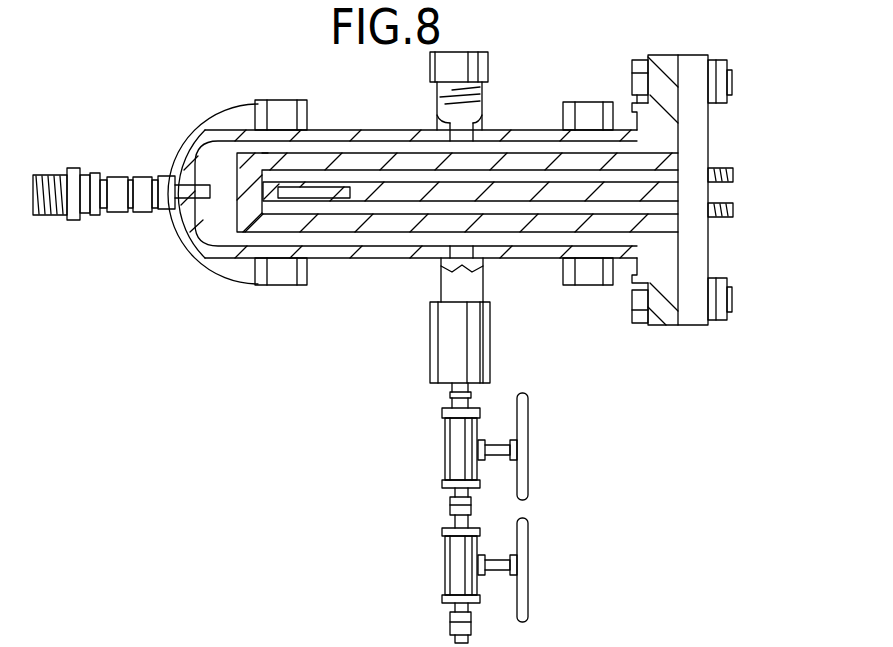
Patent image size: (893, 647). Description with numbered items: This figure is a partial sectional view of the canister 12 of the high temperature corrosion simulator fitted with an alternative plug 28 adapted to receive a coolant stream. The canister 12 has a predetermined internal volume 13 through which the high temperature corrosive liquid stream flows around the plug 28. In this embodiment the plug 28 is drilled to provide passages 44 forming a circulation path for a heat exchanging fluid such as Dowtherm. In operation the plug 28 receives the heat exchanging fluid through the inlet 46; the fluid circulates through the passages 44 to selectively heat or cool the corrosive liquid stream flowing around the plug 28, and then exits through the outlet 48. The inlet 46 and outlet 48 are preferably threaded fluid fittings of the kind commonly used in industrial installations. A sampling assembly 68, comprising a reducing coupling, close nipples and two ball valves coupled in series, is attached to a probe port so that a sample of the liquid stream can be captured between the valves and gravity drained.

The canister 12 is at (541, 86).
The internal volume 13 is at (222, 233).
The plug 28 is at (643, 145).
The passages 44 is at (385, 178).
The inlet 46 is at (734, 175).
The outlet 48 is at (734, 211).
The sampling assembly 68 is at (546, 496).